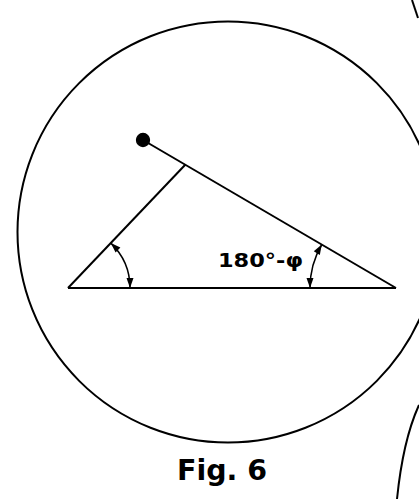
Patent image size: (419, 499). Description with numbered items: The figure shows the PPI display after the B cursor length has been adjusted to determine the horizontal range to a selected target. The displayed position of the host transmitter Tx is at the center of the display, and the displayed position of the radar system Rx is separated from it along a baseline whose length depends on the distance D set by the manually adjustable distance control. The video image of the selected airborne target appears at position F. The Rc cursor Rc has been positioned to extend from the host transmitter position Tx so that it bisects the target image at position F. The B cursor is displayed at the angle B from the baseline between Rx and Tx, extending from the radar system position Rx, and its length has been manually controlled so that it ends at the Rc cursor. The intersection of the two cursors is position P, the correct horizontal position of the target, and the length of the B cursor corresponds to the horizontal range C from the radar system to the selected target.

The position of video image of selected target F is at (143, 133).
The position of correct horizontal target position P is at (185, 165).
The horizontal range C is at (102, 203).
The Rc cursor Rc is at (359, 232).
The distance D is at (232, 299).
The angle B / B cursor B is at (128, 265).
The displayed position of radar system Rx is at (71, 302).
The displayed position of host transmitter Tx is at (391, 302).